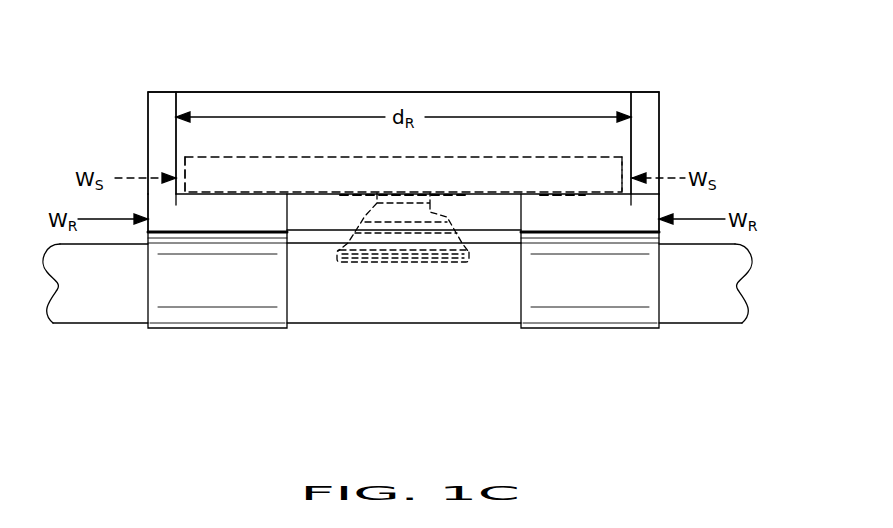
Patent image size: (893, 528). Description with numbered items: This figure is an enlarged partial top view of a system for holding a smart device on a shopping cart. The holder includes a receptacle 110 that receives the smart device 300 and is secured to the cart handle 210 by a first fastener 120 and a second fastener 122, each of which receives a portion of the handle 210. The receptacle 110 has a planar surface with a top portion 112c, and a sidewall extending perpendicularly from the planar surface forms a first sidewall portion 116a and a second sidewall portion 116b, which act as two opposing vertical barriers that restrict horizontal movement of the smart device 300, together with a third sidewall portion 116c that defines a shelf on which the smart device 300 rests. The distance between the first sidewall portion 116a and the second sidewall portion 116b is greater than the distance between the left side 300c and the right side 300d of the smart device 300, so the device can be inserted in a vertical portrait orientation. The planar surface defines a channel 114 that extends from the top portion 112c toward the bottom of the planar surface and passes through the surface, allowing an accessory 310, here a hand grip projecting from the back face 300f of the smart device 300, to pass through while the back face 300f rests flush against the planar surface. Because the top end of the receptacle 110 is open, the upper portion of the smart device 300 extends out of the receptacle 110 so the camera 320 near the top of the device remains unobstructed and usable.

The receptacle 110 is at (530, 90).
The first sidewall portion 116a is at (163, 150).
The second sidewall portion 116b is at (663, 138).
The third sidewall portion 116c is at (327, 102).
The top portion 112c is at (177, 205).
The channel 114 is at (308, 218).
The first fastener 120 is at (570, 317).
The second fastener 122 is at (237, 315).
The handle 210 is at (695, 313).
The smart device 300 is at (218, 167).
The left side 300c is at (660, 165).
The right side 300d is at (177, 165).
The back face 300f is at (483, 195).
The accessory 310 is at (378, 260).
The camera 320 is at (563, 198).